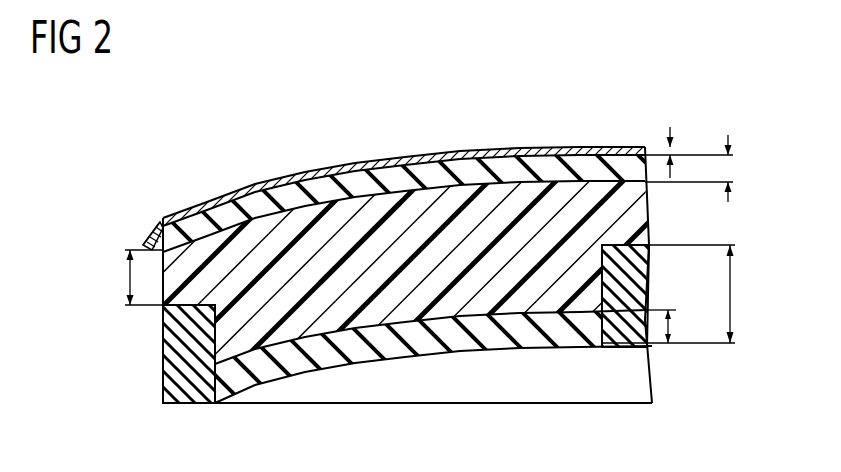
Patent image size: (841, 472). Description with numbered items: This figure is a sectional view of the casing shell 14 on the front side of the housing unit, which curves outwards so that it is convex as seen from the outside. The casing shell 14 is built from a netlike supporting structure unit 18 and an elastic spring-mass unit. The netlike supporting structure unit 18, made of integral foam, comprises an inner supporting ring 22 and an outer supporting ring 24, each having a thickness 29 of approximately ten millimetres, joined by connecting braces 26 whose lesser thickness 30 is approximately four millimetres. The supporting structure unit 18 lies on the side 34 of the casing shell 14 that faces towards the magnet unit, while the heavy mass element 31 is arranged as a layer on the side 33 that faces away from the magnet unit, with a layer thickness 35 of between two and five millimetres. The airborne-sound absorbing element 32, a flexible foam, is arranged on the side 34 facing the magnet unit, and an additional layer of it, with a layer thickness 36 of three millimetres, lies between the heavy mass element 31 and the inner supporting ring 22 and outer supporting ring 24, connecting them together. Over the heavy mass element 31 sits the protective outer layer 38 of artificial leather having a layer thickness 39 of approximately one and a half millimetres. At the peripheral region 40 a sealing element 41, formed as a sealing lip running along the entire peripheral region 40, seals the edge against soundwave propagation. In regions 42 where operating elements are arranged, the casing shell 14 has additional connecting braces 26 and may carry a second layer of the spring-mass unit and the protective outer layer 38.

The casing shell 14 is at (565, 104).
The netlike supporting structure unit 18 is at (162, 332).
The inner supporting ring 22 is at (620, 275).
The outer supporting ring 24 is at (162, 382).
The connecting braces 26 is at (430, 348).
The thickness 29 is at (735, 290).
The thickness 30 is at (672, 328).
The heavy mass element 31 is at (283, 192).
The airborne-sound absorbing element 32 is at (637, 212).
The side 33 is at (406, 152).
The side 34 is at (311, 373).
The layer thickness 35 is at (730, 170).
The layer thickness 36 is at (126, 275).
The protective outer layer 38 is at (205, 200).
The layer thickness 39 is at (670, 152).
The peripheral region 40 is at (154, 216).
The sealing element 41 is at (146, 246).
The regions 42 is at (352, 233).